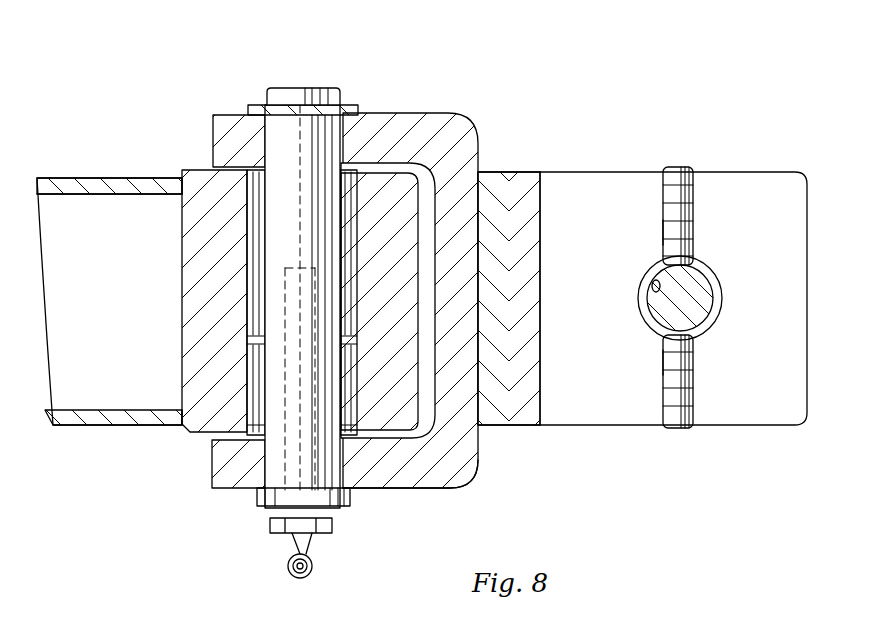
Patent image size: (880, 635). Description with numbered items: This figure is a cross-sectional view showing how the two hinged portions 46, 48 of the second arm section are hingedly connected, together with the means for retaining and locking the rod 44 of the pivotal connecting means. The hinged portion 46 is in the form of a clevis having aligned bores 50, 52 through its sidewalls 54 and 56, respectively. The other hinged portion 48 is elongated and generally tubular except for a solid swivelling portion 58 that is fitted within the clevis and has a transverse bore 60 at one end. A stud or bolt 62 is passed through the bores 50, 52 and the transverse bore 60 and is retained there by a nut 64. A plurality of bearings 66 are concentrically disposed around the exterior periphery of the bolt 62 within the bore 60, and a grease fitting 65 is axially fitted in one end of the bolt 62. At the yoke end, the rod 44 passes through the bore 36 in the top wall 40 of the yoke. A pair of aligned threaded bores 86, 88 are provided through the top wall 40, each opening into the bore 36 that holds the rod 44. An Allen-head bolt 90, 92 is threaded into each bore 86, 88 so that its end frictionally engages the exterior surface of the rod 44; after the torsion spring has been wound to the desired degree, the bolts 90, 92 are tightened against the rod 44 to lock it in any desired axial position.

The bore 36 is at (655, 293).
The top wall 40 is at (578, 190).
The rod 44 is at (697, 300).
The hinged portion 46 is at (468, 135).
The hinged portion 48 is at (84, 186).
The bore 50 is at (265, 142).
The bore 52 is at (265, 488).
The sidewall 54 is at (396, 128).
The sidewall 56 is at (437, 473).
The solid swivelling portion 58 is at (183, 432).
The transverse bore 60 is at (256, 240).
The stud or bolt 62 is at (300, 212).
The nut 64 is at (347, 108).
The grease fitting 65 is at (290, 545).
The bearings 66 is at (347, 300).
The threaded bore 86 is at (670, 226).
The threaded bore 88 is at (668, 395).
The Allen-head bolt 90 is at (693, 215).
The Allen-head bolt 92 is at (668, 357).